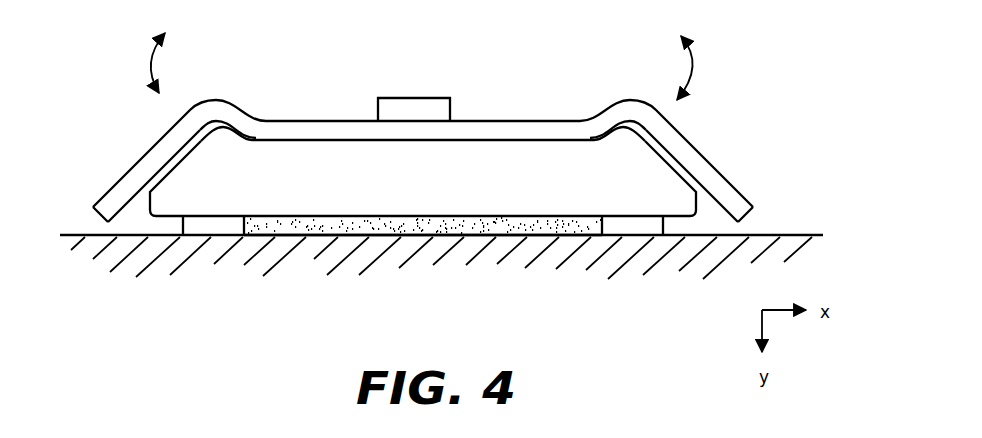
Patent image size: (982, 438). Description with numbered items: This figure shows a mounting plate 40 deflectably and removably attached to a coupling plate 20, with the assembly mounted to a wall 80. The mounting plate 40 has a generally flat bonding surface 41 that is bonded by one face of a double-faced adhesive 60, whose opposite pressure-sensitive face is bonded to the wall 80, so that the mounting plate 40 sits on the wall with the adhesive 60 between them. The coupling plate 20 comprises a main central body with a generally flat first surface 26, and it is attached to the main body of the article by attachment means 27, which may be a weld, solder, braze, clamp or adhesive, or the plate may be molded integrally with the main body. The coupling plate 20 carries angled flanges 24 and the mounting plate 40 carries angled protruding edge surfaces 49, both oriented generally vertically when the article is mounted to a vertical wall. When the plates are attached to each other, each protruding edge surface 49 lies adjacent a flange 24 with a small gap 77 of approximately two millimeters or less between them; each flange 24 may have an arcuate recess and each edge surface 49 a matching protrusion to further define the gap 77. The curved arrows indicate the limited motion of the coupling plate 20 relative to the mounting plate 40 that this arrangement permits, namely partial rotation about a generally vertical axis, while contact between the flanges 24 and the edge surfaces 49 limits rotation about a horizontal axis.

The coupling plate 20 is at (228, 102).
The angled flanges 24 is at (160, 140).
The first surface 26 is at (523, 140).
The attachment means 27 is at (405, 97).
The mounting plate 40 is at (182, 217).
The bonding surface 41 is at (655, 217).
The angled protruding edge surfaces 49 is at (160, 178).
The double-faced adhesive 60 is at (380, 220).
The gap 77 is at (194, 142).
The wall 80 is at (778, 235).